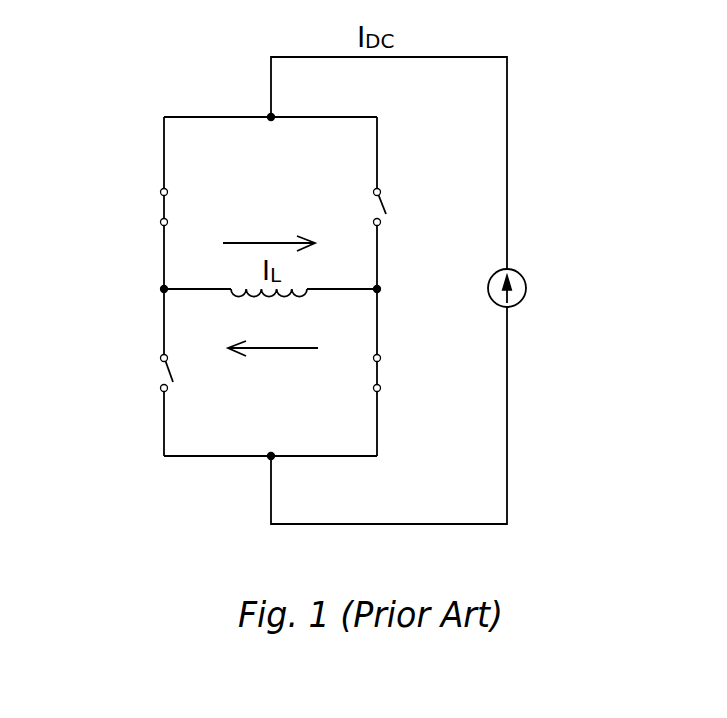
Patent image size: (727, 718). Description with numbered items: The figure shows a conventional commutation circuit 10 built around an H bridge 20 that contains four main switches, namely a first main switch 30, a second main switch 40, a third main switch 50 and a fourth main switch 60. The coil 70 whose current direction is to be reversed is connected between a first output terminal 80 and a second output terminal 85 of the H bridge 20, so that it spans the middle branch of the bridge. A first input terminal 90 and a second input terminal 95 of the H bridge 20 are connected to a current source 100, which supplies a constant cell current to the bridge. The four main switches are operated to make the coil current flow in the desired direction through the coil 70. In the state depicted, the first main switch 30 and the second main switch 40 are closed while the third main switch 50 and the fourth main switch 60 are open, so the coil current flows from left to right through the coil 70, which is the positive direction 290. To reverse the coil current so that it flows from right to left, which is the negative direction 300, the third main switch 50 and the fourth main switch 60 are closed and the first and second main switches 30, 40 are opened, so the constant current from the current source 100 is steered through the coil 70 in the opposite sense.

The commutation circuit 10 is at (120, 66).
The H bridge 20 is at (162, 158).
The first main switch 30 is at (160, 205).
The second main switch 40 is at (379, 373).
The third main switch 50 is at (385, 197).
The fourth main switch 60 is at (160, 370).
The coil 70 is at (267, 297).
The first output terminal 80 is at (162, 289).
The second output terminal 85 is at (380, 289).
The first input terminal 90 is at (271, 116).
The second input terminal 95 is at (271, 458).
The current source 100 is at (527, 283).
The positive direction 290 is at (270, 242).
The negative direction 300 is at (290, 349).